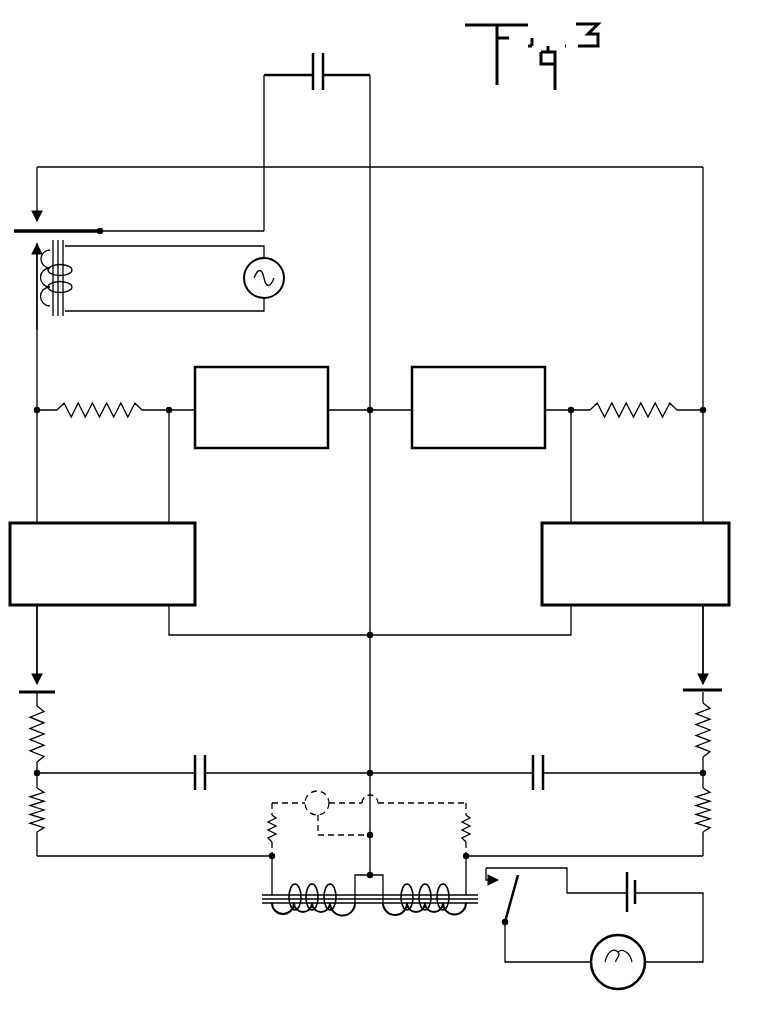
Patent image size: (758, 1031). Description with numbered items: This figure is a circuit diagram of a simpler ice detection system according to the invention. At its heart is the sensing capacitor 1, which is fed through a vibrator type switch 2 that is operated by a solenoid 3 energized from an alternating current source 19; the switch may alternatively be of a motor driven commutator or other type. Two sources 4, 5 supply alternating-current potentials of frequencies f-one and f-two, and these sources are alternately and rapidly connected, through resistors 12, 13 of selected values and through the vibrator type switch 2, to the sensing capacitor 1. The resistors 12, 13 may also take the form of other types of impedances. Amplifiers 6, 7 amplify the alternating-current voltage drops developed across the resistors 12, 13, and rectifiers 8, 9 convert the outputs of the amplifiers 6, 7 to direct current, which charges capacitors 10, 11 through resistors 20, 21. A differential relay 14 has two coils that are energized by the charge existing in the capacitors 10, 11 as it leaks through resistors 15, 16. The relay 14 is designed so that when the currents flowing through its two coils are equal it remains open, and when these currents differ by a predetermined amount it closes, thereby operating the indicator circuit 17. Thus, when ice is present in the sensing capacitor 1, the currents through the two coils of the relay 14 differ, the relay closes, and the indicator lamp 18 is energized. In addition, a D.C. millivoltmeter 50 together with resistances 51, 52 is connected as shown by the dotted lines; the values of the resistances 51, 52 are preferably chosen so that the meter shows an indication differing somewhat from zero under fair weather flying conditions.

The sensing capacitor 1 is at (325, 62).
The vibrator type switch 2 is at (70, 229).
The solenoid 3 is at (70, 268).
The source of alternating-current potential of frequency f1 4 is at (264, 367).
The source of alternating-current potential of frequency f2 5 is at (479, 367).
The amplifier 6 is at (93, 523).
The amplifier 7 is at (606, 523).
The rectifier 8 is at (45, 692).
The rectifier 9 is at (690, 686).
The capacitor 10 is at (200, 752).
The capacitor 11 is at (542, 752).
The resistor 12 is at (92, 403).
The resistor 13 is at (641, 402).
The differential relay 14 is at (367, 912).
The resistor 15 is at (44, 810).
The resistor 16 is at (694, 803).
The indicator circuit 17 is at (523, 962).
The indicator lamp 18 is at (645, 975).
The alternating current source 19 is at (285, 278).
The resistor 20 is at (45, 740).
The resistor 21 is at (694, 731).
The D.C. millivoltmeter 50 is at (312, 817).
The resistance 51 is at (265, 830).
The resistance 52 is at (472, 826).